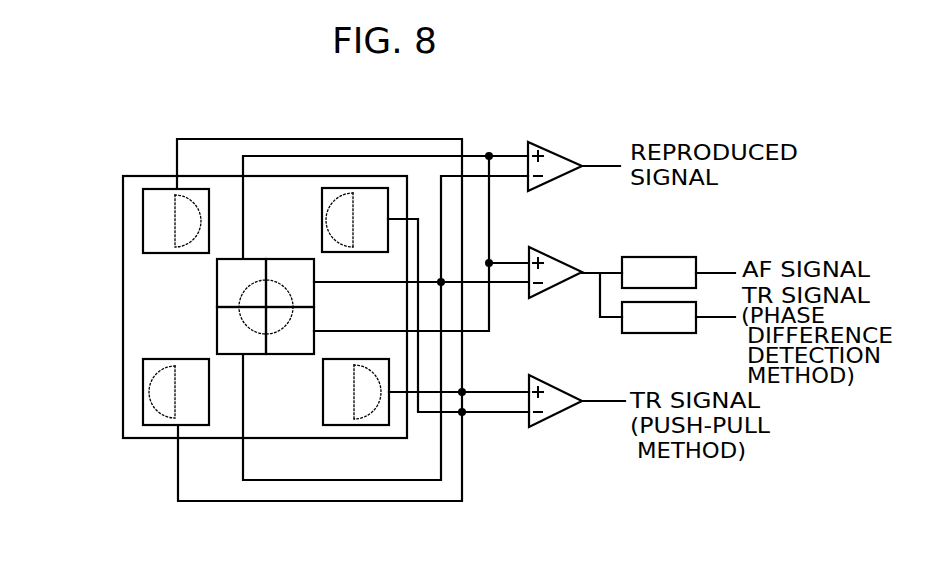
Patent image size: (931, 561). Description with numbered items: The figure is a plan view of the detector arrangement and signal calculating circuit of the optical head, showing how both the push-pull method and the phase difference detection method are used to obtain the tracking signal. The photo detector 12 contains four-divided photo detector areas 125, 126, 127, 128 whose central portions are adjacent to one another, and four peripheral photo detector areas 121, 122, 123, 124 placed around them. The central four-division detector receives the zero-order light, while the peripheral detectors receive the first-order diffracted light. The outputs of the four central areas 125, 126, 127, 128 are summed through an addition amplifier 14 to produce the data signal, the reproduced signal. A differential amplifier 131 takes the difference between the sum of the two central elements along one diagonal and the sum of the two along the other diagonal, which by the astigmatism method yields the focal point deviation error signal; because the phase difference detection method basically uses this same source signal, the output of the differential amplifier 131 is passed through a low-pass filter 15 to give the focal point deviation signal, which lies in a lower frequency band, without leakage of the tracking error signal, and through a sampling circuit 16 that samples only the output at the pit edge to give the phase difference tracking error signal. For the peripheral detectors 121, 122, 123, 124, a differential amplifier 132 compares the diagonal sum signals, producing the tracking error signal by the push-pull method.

The photo detector 12 is at (140, 176).
The peripheral photo detector area 121 is at (143, 224).
The peripheral photo detector area 122 is at (143, 400).
The peripheral photo detector area 123 is at (347, 189).
The peripheral photo detector area 124 is at (365, 425).
The four-divided photo detector area 125 is at (217, 290).
The four-divided photo detector area 126 is at (280, 259).
The four-divided photo detector area 127 is at (217, 338).
The four-divided photo detector area 128 is at (297, 354).
The addition amplifier 14 is at (548, 144).
The differential amplifier 131 is at (550, 251).
The differential amplifier 132 is at (550, 380).
The low-pass filter 15 is at (650, 257).
The sampling circuit 16 is at (650, 333).